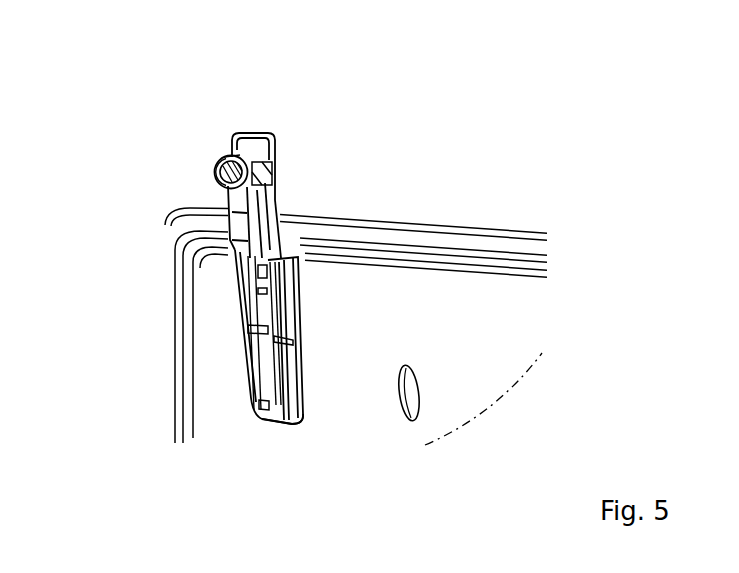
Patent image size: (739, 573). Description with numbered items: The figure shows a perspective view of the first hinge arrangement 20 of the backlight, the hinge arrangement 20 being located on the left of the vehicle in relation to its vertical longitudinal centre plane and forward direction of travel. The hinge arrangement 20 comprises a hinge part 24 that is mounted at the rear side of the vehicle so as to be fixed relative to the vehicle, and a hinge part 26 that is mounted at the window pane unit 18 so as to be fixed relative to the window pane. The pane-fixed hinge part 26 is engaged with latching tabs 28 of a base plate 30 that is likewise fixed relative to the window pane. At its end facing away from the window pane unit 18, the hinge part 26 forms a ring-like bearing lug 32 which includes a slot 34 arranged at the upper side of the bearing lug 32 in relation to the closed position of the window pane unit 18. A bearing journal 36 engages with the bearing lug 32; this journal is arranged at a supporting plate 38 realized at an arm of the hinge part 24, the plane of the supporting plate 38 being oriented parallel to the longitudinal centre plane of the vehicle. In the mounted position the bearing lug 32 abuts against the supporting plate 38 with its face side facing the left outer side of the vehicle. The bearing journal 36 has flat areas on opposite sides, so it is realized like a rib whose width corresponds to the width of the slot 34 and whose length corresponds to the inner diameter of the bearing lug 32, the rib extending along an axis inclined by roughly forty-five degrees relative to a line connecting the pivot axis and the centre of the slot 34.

The window pane unit 18 is at (453, 307).
The hinge arrangement 20 is at (238, 158).
The hinge part 24 is at (275, 167).
The hinge part 26 is at (322, 221).
The latching tabs 28 is at (288, 378).
The base plate 30 is at (300, 423).
The bearing lug 32 is at (220, 183).
The slot 34 is at (229, 157).
The bearing journal 36 is at (219, 162).
The supporting plate 38 is at (214, 172).